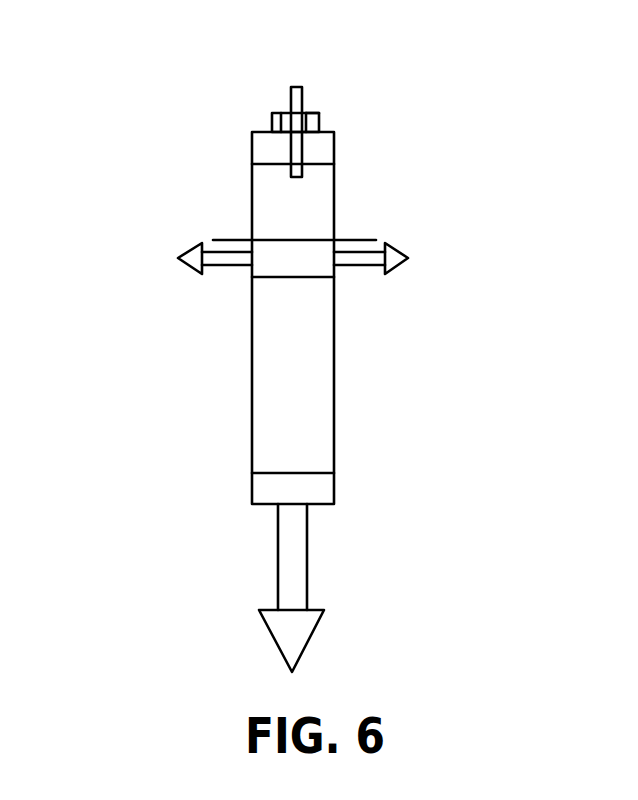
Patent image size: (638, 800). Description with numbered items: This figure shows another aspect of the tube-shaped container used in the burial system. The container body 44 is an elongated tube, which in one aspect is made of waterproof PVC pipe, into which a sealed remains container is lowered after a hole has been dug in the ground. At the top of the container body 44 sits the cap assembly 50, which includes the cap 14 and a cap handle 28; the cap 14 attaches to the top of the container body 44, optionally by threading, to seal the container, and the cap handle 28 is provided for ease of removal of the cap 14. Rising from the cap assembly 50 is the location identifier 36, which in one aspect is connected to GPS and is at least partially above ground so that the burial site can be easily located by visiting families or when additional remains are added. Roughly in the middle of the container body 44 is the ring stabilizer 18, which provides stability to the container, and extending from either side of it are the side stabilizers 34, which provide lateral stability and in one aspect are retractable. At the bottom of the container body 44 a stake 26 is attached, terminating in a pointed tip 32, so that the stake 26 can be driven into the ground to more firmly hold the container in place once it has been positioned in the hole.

The cap 14 is at (252, 149).
The ring stabilizer 18 is at (233, 240).
The stake 26 is at (305, 557).
The cap handle 28 is at (312, 113).
The tip 32 is at (315, 629).
The side stabilizers 34 is at (193, 250).
The location identifier 36 is at (297, 87).
The container body 44 is at (334, 368).
The cap assembly 50 is at (272, 119).